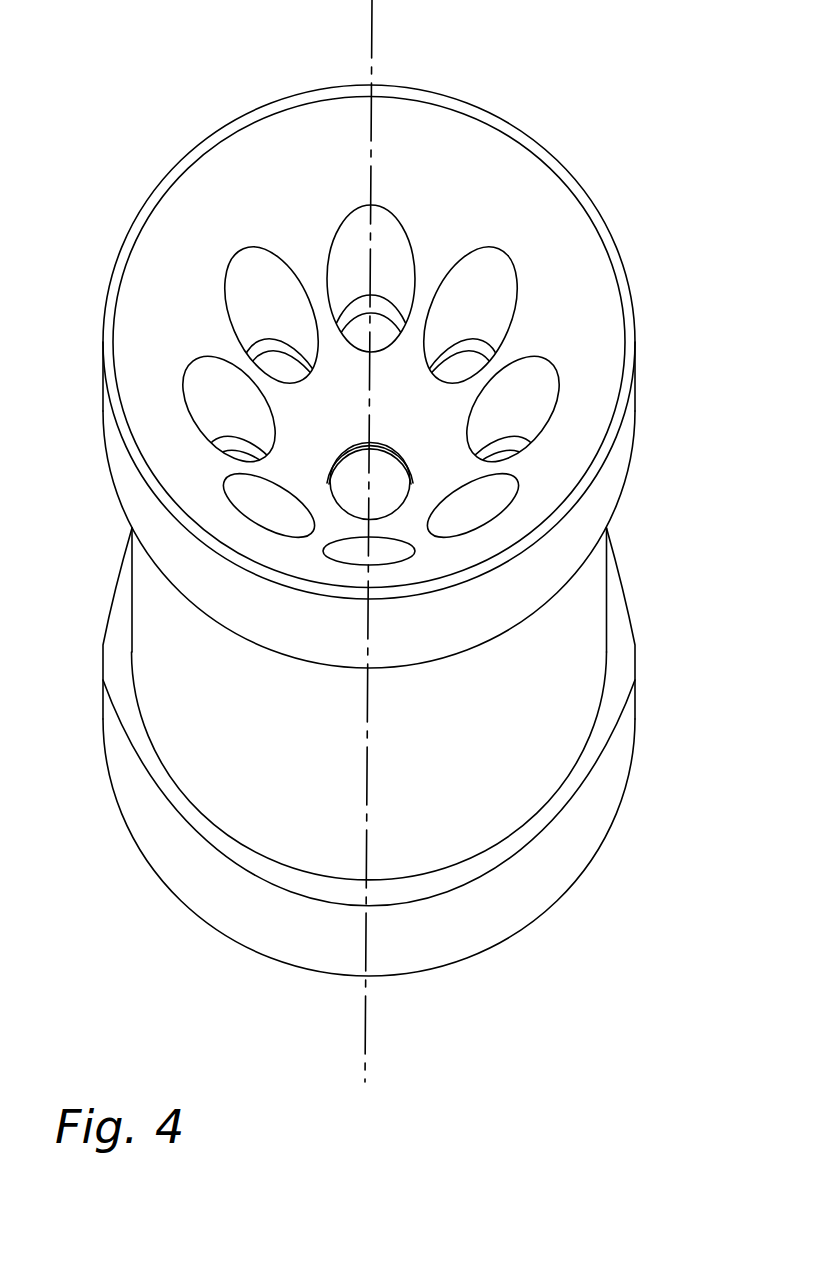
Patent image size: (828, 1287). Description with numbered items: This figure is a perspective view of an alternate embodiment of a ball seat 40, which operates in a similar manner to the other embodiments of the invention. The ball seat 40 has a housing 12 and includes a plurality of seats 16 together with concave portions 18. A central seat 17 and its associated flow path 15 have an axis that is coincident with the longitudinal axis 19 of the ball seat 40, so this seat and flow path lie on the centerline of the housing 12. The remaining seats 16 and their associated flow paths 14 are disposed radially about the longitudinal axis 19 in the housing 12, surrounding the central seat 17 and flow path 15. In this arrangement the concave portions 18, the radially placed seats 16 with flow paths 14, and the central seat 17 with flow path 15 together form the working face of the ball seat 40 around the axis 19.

The housing 12 is at (607, 597).
The flow path 14 is at (267, 368).
The flow path 15 is at (348, 475).
The seat 16 is at (284, 347).
The seat 17 is at (392, 447).
The concave portion 18 is at (260, 263).
The longitudinal axis 19 is at (374, 26).
The ball seat 40 is at (634, 117).